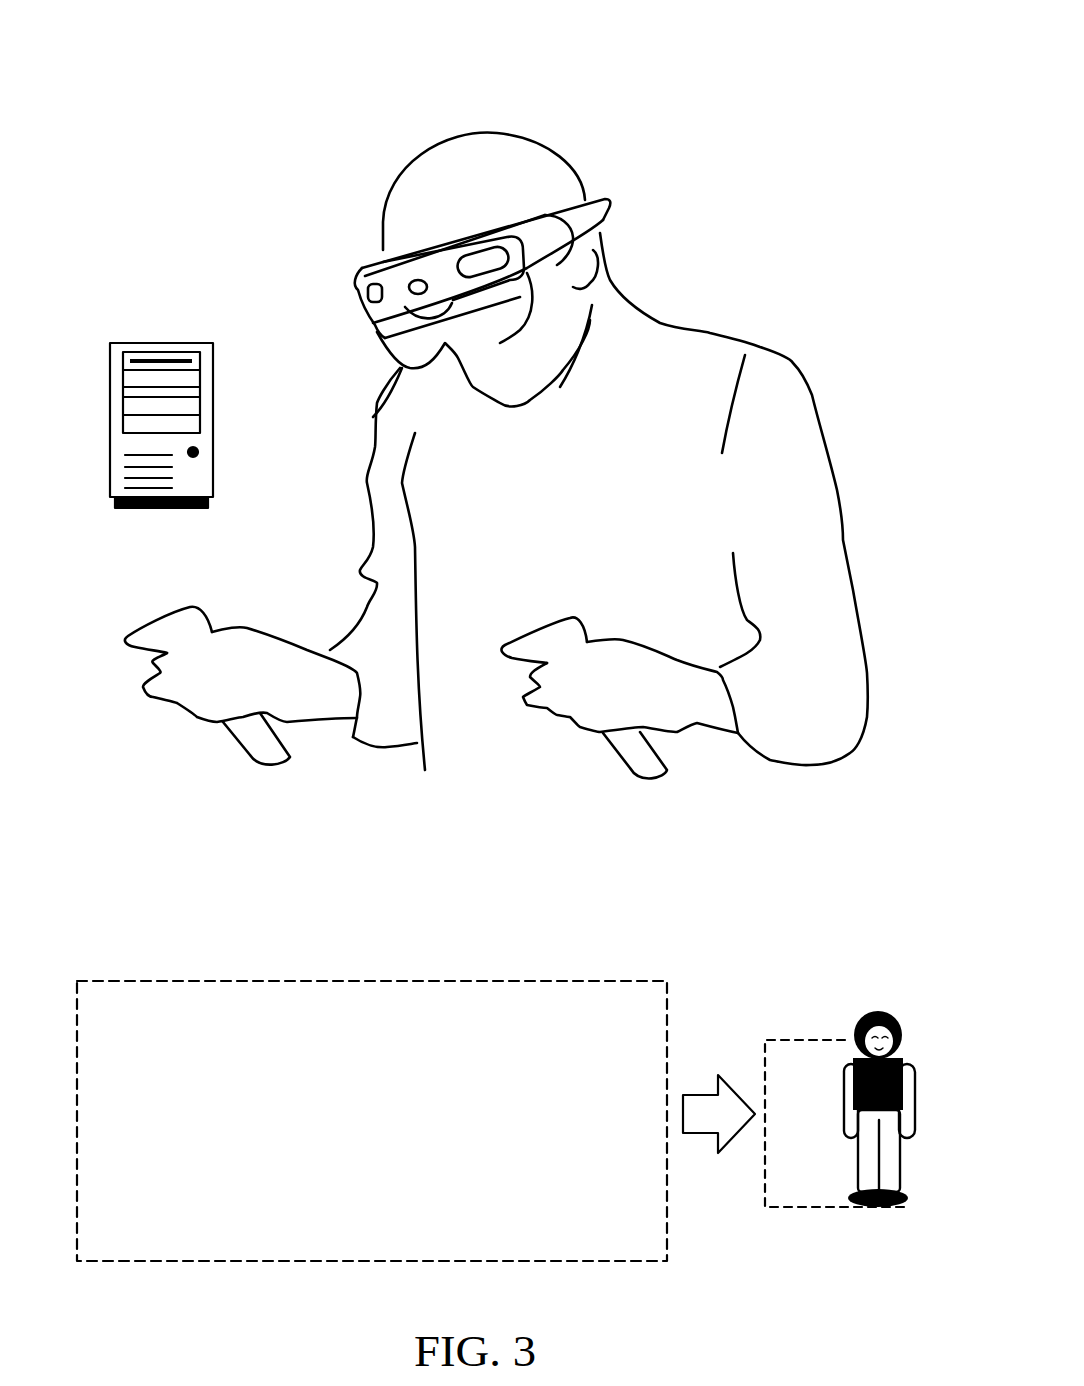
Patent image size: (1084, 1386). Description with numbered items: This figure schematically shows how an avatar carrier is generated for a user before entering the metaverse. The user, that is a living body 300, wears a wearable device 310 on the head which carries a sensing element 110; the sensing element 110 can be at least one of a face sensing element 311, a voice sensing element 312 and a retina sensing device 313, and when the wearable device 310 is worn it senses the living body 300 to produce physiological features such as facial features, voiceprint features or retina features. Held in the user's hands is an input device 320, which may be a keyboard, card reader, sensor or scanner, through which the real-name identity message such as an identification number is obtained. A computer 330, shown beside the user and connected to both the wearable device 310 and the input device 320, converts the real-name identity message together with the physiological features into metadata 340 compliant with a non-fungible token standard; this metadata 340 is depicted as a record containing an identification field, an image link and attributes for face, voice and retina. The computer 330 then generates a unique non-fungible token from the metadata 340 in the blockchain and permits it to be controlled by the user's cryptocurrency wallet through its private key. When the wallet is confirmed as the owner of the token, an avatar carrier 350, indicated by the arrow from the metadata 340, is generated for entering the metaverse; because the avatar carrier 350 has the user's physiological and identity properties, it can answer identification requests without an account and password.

The sensing element 110 is at (460, 169).
The living body 300 is at (746, 282).
The wearable device 310 is at (603, 193).
The face sensing element 311 is at (417, 280).
The voice sensing element 312 is at (367, 293).
The retina sensing device 313 is at (478, 258).
The input device 320 is at (652, 788).
The computer 330 is at (190, 342).
The metadata 340 is at (608, 977).
The avatar carrier 350 is at (890, 1011).